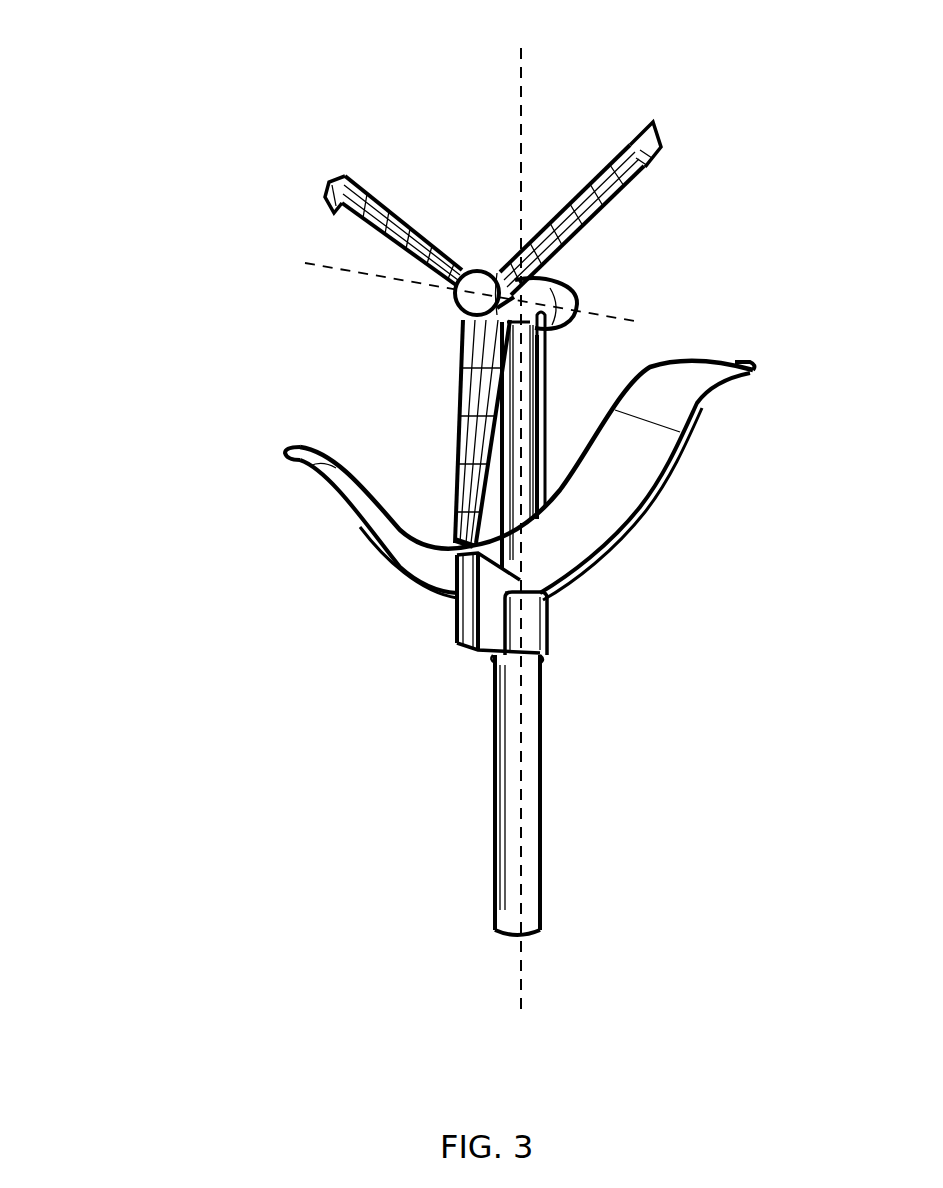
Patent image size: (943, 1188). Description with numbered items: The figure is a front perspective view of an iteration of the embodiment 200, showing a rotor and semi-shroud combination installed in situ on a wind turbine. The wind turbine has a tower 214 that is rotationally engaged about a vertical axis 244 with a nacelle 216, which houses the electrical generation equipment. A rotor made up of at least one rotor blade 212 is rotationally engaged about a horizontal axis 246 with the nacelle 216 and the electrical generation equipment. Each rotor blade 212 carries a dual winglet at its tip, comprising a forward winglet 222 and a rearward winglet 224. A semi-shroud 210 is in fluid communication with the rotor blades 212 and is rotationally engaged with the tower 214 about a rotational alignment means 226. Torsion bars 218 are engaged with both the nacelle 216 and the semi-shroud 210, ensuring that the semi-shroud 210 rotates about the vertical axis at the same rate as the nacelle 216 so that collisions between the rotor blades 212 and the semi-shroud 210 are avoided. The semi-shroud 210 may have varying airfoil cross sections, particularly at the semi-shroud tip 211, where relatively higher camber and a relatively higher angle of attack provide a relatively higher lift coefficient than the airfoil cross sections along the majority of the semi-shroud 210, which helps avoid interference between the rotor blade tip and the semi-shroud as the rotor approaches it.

The anchor assembly 200 is at (105, 60).
The semi-shroud 210 is at (360, 517).
The semi-shroud tip 211 is at (673, 390).
The rotor blade 212 is at (583, 213).
The tower 214 is at (508, 785).
The nacelle 216 is at (533, 289).
The torsion bar 218 is at (547, 357).
The forward winglet 222 is at (630, 143).
The rearward winglet 224 is at (660, 140).
The rotational alignment means 226 is at (523, 632).
The vertical axis 244 is at (521, 60).
The horizontal axis 246 is at (353, 270).